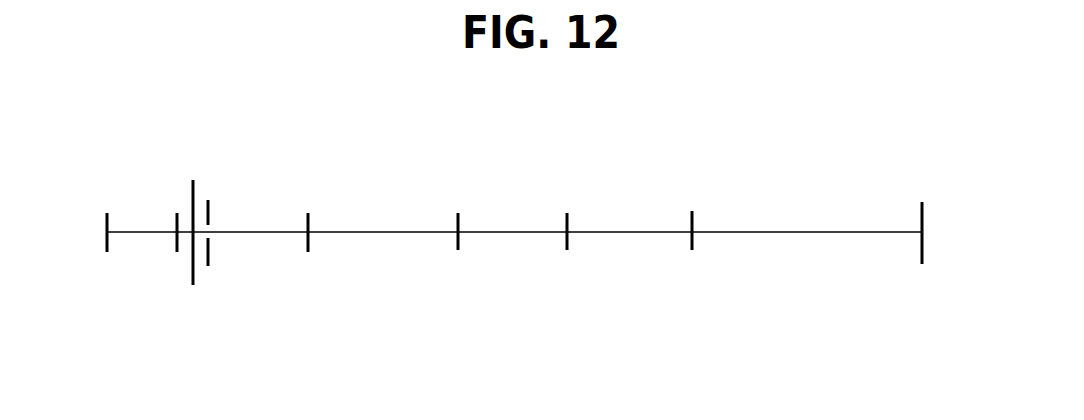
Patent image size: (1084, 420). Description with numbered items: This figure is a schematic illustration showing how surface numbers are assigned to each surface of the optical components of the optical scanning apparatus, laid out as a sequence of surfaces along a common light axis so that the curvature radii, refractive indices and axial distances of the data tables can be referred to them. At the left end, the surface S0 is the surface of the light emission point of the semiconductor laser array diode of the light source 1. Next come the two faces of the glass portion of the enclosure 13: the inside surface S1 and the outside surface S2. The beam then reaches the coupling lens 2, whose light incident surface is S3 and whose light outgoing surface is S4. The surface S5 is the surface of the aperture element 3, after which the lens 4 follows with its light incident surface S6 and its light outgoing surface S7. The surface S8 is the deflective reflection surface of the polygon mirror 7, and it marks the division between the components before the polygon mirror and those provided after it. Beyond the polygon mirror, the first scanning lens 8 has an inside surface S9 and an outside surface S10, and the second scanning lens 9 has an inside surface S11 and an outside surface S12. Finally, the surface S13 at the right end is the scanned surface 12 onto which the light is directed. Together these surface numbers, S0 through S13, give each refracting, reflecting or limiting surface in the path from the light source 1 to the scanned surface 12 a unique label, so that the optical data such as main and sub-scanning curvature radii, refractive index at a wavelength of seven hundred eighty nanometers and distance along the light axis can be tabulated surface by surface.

The light source 1 is at (506, 228).
The coupling lens 2 is at (164, 310).
The aperture element 3 is at (200, 260).
The lens 4 is at (311, 297).
The polygon mirror 7 is at (462, 268).
The first scanning lens 8 is at (571, 242).
The second scanning lens 9 is at (694, 246).
The scanned surface 12 is at (898, 253).
The enclosure 13 is at (200, 232).
The surface of the light emission point S0 is at (107, 252).
The inside surface of the glass portion of the enclosure S1 is at (165, 273).
The outside surface of the glass portion of the enclosure S2 is at (179, 252).
The light incident surface of the coupling lens S3 is at (192, 215).
The light outgoing surface of the coupling lens S4 is at (225, 219).
The surface of the aperture element S5 is at (227, 255).
The light incident surface of the lens S6 is at (311, 257).
The light outgoing surface of the lens S7 is at (309, 243).
The deflective reflection surface of the polygon mirror S8 is at (459, 245).
The inside surface of the first scanning lens S9 is at (571, 205).
The outside surface of the first scanning lens S10 is at (569, 222).
The inside surface of the second scanning lens S11 is at (694, 205).
The outside surface of the second scanning lens S12 is at (694, 222).
The scanned surface S13 is at (920, 222).